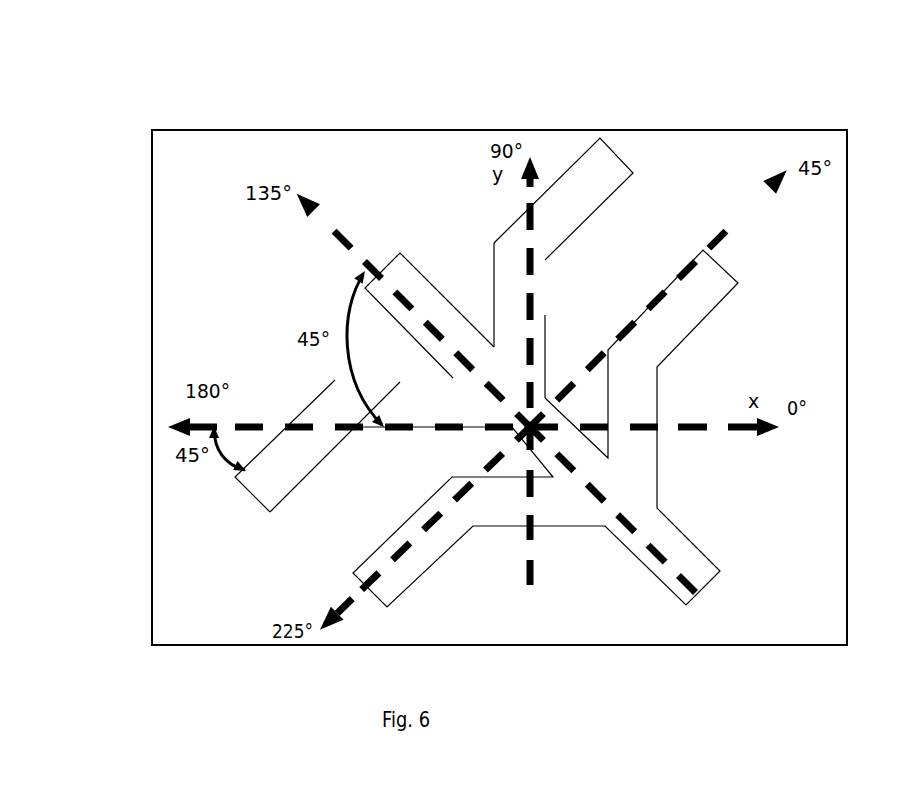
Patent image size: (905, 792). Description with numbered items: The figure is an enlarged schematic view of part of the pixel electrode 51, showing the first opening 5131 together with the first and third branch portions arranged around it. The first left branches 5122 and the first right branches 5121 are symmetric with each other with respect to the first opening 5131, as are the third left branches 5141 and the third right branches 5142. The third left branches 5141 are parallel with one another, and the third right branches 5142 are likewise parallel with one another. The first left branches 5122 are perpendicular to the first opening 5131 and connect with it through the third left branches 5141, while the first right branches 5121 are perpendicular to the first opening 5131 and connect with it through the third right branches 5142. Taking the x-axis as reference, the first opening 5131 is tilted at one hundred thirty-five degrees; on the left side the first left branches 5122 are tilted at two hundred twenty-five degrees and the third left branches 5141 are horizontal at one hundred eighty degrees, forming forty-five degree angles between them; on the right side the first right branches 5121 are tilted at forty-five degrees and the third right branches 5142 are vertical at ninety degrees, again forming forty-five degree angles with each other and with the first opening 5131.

The pixel electrode 51 is at (713, 208).
The first right branches 5121 is at (557, 217).
The first left branches 5122 is at (295, 419).
The first opening 5131 is at (420, 290).
The third left branches 5141 is at (400, 393).
The third right branches 5142 is at (512, 282).